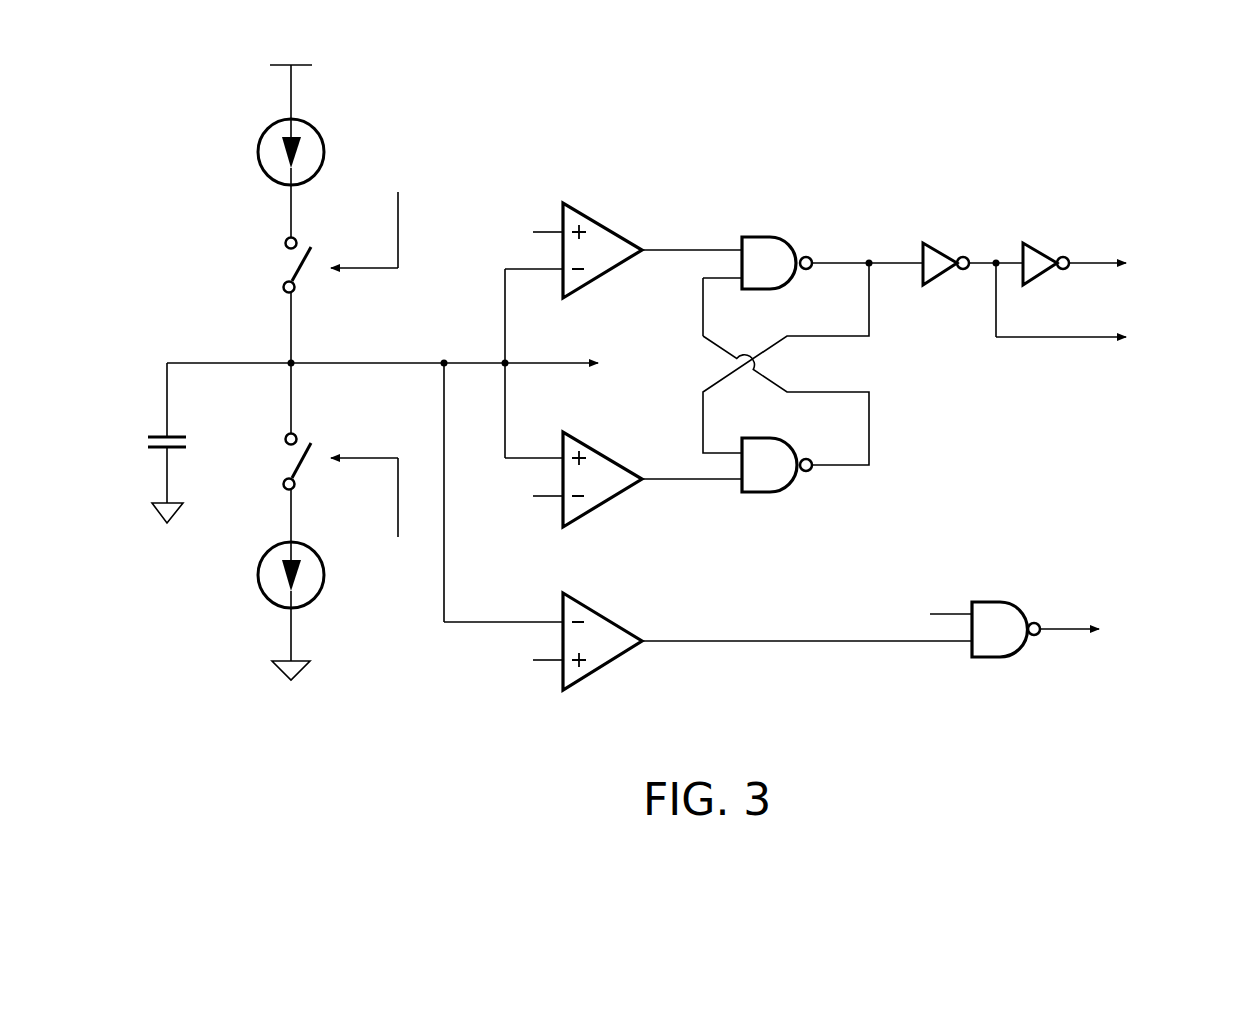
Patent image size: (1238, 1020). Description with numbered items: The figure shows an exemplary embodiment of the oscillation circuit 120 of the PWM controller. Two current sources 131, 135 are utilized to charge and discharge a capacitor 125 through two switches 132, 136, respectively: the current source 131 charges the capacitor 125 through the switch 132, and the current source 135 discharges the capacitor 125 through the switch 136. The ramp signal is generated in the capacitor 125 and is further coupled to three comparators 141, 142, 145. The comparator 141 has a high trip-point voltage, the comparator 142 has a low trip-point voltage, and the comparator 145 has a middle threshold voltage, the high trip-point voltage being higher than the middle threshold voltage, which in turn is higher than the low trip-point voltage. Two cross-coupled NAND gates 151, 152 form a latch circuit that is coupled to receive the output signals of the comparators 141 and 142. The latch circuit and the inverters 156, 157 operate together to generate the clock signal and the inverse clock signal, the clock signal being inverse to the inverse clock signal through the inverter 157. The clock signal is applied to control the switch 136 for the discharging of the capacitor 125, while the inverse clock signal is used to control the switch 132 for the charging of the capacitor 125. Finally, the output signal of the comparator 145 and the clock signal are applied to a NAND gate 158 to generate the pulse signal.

The oscillation circuit 120 is at (1165, 80).
The capacitor 125 is at (157, 428).
The current source 131 is at (256, 158).
The switch 132 is at (273, 270).
The current source 135 is at (256, 582).
The switch 136 is at (273, 467).
The comparator 141 is at (602, 220).
The comparator 142 is at (602, 450).
The comparator 145 is at (602, 610).
The NAND gate 151 is at (775, 235).
The NAND gate 152 is at (775, 438).
The inverter 156 is at (938, 243).
The inverter 157 is at (1038, 243).
The NAND gate 158 is at (1003, 600).